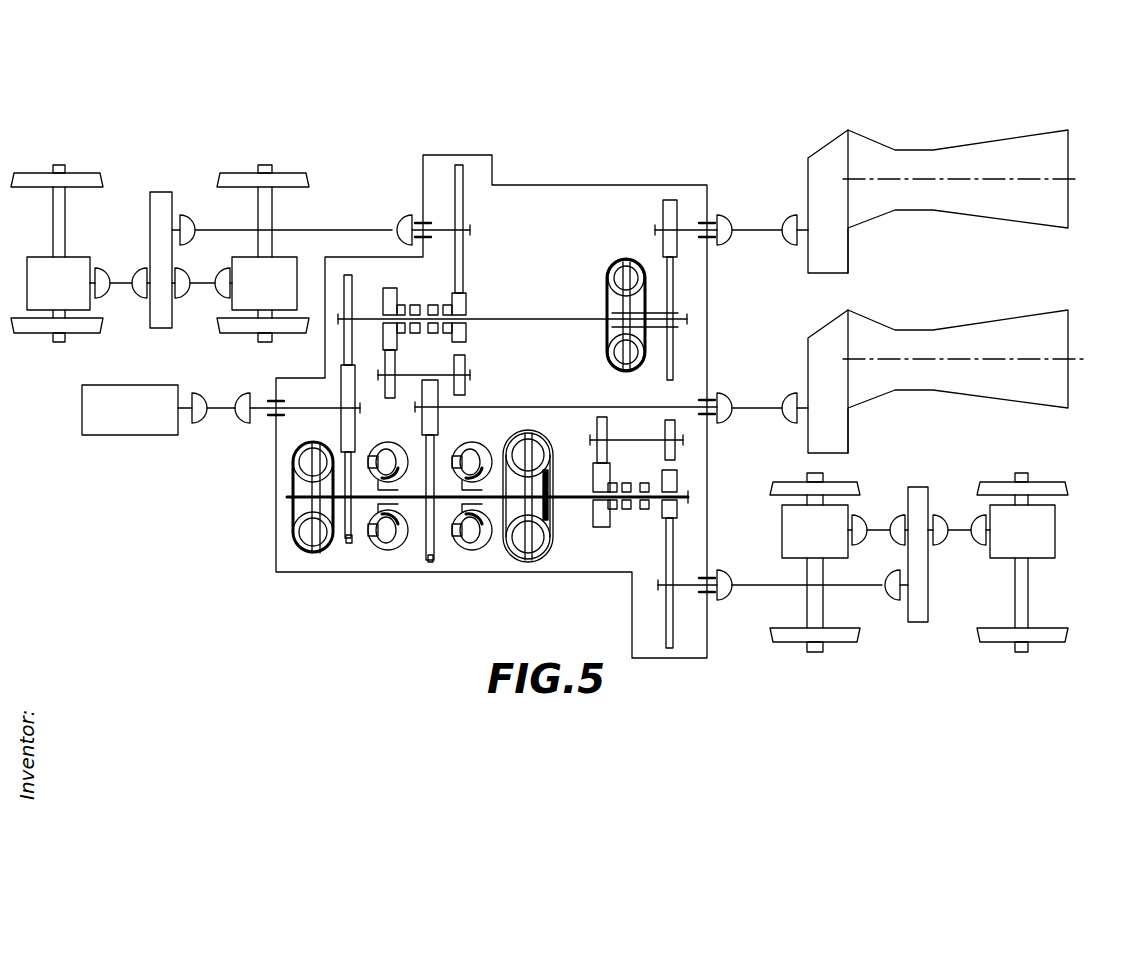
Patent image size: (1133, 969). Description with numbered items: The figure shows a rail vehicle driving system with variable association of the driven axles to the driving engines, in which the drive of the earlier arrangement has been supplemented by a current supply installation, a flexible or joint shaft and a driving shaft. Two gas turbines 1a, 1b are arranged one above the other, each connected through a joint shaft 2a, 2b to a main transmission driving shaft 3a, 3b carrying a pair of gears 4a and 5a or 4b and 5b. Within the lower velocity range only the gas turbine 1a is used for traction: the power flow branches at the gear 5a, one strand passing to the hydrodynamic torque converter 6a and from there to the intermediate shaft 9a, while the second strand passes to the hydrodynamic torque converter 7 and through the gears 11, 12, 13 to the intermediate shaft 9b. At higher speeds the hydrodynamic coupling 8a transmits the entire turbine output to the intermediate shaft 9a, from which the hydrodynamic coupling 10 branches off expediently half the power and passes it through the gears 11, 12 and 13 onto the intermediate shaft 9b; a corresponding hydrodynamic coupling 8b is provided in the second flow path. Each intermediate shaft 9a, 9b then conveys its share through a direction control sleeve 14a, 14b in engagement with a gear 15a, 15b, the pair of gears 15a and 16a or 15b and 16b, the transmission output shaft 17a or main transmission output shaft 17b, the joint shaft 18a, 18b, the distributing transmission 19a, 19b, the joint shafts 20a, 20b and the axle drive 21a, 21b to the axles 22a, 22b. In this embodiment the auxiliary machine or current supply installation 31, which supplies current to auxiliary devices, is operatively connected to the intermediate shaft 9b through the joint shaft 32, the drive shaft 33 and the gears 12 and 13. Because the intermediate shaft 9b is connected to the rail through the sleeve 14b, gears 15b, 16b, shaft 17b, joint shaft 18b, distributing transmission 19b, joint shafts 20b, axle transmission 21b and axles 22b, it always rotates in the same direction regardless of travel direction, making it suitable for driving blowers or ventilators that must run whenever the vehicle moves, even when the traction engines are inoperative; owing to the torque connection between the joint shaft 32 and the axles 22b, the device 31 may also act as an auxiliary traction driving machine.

The gas turbine 1a is at (921, 340).
The gas turbine 1b is at (923, 165).
The joint shaft 2a is at (750, 407).
The joint shaft 2b is at (750, 228).
The main transmission driving shaft 3a is at (528, 407).
The main transmission driving shaft 3b is at (685, 230).
The gear 4a is at (432, 420).
The gear 4b is at (670, 212).
The gear 5a is at (430, 555).
The gear 5b is at (667, 290).
The hydrodynamic torque converter 6a is at (470, 532).
The hydrodynamic torque converter 7 is at (388, 532).
The hydrodynamic coupling 8a is at (522, 540).
The hydrodynamic coupling 8b is at (618, 277).
The intermediate shaft 9a is at (568, 508).
The intermediate shaft 9b is at (505, 317).
The hydrodynamic coupling 10 is at (325, 540).
The gear 11 is at (345, 540).
The gear 12 is at (347, 380).
The gear 13 is at (350, 280).
The direction control sleeve 14a is at (642, 503).
The direction control sleeve 14b is at (413, 303).
The gear 15a is at (670, 487).
The gear 15b is at (463, 303).
The gear 16a is at (668, 542).
The gear 16b is at (458, 200).
The transmission output shaft 17a is at (683, 583).
The main transmission output shaft 17b is at (415, 216).
The joint shaft 18a is at (770, 586).
The joint shaft 18b is at (213, 230).
The distributing transmission 19a is at (918, 512).
The distributing transmission 19b is at (162, 200).
The joint shafts 20a is at (875, 530).
The joint shafts 20b is at (115, 283).
The axle drive 21a is at (835, 522).
The axle drive 21b is at (65, 275).
The axles 22a is at (817, 615).
The axles 22b is at (60, 168).
The current supply installation 31 is at (120, 425).
The joint shaft 32 is at (217, 410).
The drive shaft 33 is at (264, 412).